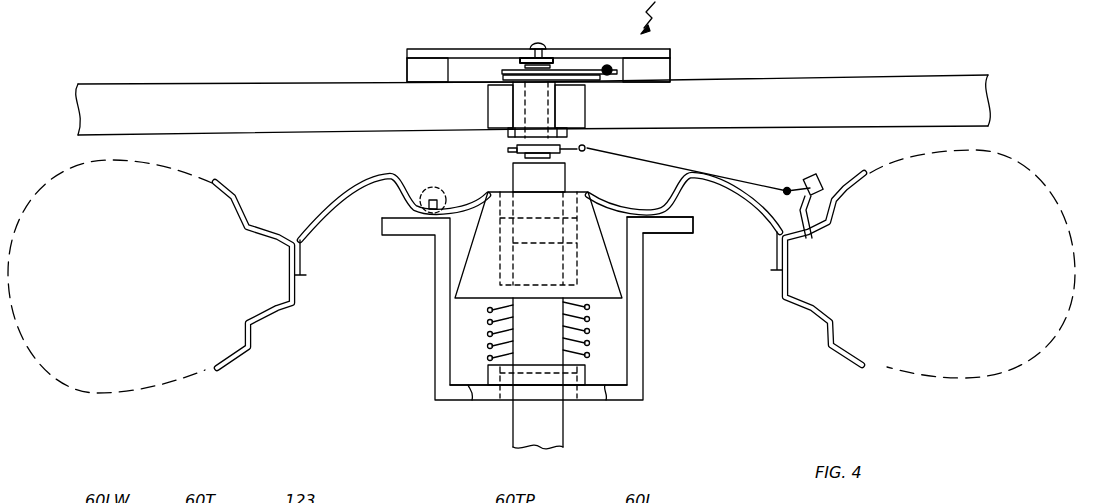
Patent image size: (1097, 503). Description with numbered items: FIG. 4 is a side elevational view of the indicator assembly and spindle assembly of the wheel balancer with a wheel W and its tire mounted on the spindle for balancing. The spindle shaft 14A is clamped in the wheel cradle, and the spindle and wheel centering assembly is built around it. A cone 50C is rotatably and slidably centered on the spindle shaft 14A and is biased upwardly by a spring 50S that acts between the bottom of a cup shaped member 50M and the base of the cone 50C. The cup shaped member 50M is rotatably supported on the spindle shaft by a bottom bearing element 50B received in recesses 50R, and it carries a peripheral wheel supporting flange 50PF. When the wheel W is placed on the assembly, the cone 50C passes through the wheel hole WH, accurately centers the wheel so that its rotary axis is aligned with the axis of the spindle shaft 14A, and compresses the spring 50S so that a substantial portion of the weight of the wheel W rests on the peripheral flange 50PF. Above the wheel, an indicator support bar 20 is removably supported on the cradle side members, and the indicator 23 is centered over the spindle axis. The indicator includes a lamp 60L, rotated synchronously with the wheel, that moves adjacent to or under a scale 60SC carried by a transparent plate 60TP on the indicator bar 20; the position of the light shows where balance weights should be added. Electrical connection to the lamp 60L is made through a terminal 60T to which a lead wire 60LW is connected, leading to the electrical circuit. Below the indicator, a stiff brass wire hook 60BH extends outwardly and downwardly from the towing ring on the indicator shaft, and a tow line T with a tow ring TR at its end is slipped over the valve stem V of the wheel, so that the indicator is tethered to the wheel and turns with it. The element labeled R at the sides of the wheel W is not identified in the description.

The indicator support bar 20 is at (770, 73).
The spindle shaft 14A is at (552, 424).
The indicator 23 is at (659, 17).
The terminal 60T is at (539, 42).
The transparent plate 60TP is at (580, 48).
The lead wire 60LW is at (526, 45).
The lamp 60L is at (610, 67).
The scale 60SC is at (670, 50).
The stiff brass wire hook 60BH is at (575, 152).
The tow line T is at (645, 160).
The tow ring TR is at (788, 187).
The valve stem V is at (820, 176).
The wheel hole WH is at (488, 193).
The peripheral wheel supporting flange 50PF is at (695, 226).
The cone 50C is at (602, 284).
The spring 50S is at (587, 343).
The cup shaped member 50M is at (643, 378).
The recesses 50R is at (505, 376).
The bottom bearing element 50B is at (507, 398).
The rim R is at (299, 306).
The wheel W is at (262, 331).